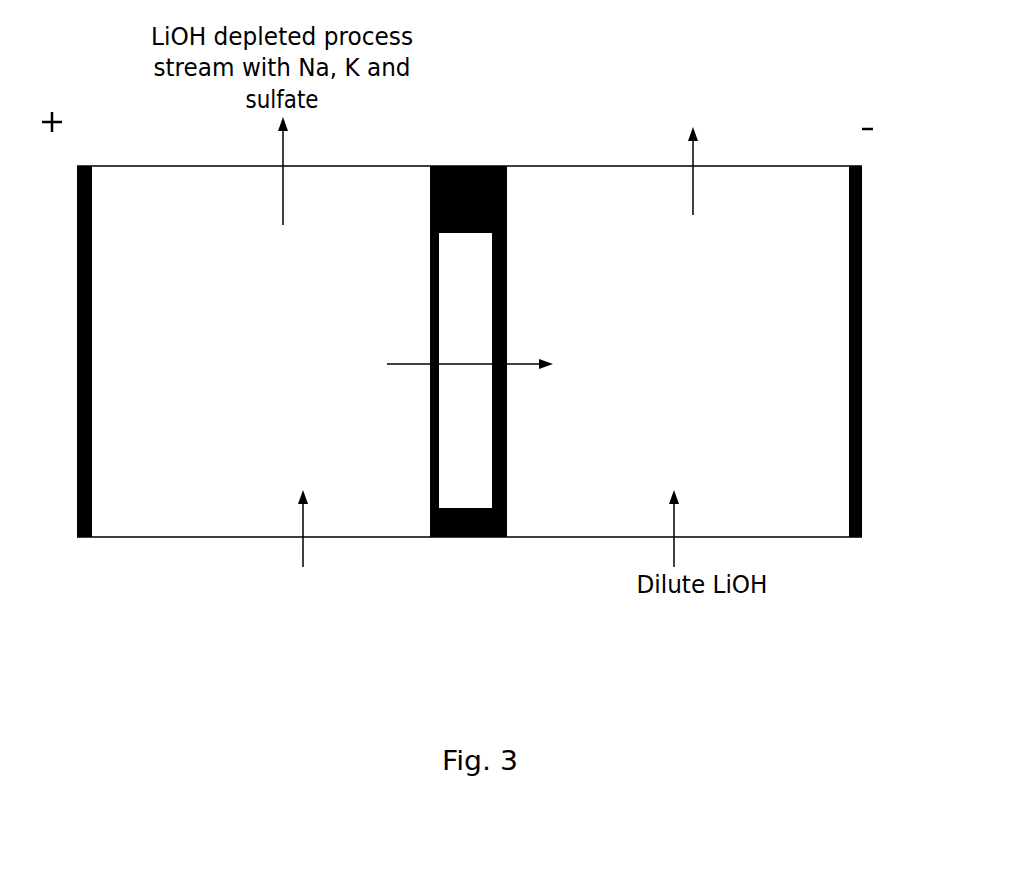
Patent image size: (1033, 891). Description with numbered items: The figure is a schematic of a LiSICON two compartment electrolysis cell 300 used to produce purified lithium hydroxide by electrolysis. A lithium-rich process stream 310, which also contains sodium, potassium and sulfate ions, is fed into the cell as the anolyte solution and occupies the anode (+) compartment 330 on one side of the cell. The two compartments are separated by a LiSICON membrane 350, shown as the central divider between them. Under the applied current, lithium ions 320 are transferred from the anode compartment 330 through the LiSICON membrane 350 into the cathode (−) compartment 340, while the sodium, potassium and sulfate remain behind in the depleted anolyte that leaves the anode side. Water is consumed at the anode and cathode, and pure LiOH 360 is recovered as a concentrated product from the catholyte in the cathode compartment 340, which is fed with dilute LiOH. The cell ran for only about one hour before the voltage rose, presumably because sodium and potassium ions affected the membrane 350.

The two compartment electrolysis cell 300 is at (473, 152).
The process stream 310 is at (282, 589).
The lithium ions 320 is at (441, 352).
The anode compartment 330 is at (250, 288).
The cathode compartment 340 is at (643, 293).
The LiSICON membrane 350 is at (463, 538).
The pure LiOH 360 is at (702, 132).